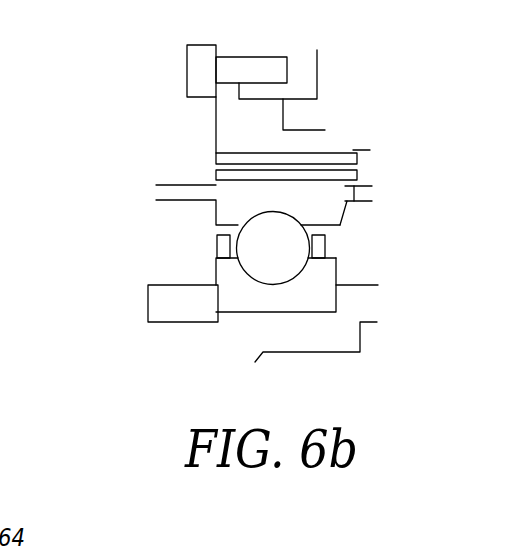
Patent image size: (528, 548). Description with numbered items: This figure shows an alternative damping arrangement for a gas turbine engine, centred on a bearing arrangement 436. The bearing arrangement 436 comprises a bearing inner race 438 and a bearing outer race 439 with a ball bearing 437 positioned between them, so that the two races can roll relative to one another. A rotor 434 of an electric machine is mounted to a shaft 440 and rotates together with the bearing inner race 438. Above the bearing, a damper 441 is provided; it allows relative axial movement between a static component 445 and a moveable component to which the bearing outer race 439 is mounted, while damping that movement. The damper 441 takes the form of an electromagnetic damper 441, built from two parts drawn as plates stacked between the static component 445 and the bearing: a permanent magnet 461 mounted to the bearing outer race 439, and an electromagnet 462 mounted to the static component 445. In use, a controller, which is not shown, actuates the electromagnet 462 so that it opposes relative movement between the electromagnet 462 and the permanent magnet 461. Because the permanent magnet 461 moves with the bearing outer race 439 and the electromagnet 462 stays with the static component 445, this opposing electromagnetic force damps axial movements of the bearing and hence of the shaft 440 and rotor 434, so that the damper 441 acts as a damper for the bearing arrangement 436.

The rotor 434 is at (148, 302).
The bearing arrangement 436 is at (126, 228).
The ball bearing 437 is at (290, 250).
The bearing inner race 438 is at (330, 283).
The bearing outer race 439 is at (362, 207).
The shaft 440 is at (362, 335).
The damper 441 is at (150, 152).
The static component 445 is at (352, 151).
The permanent magnet 461 is at (357, 172).
The electromagnet 462 is at (358, 157).